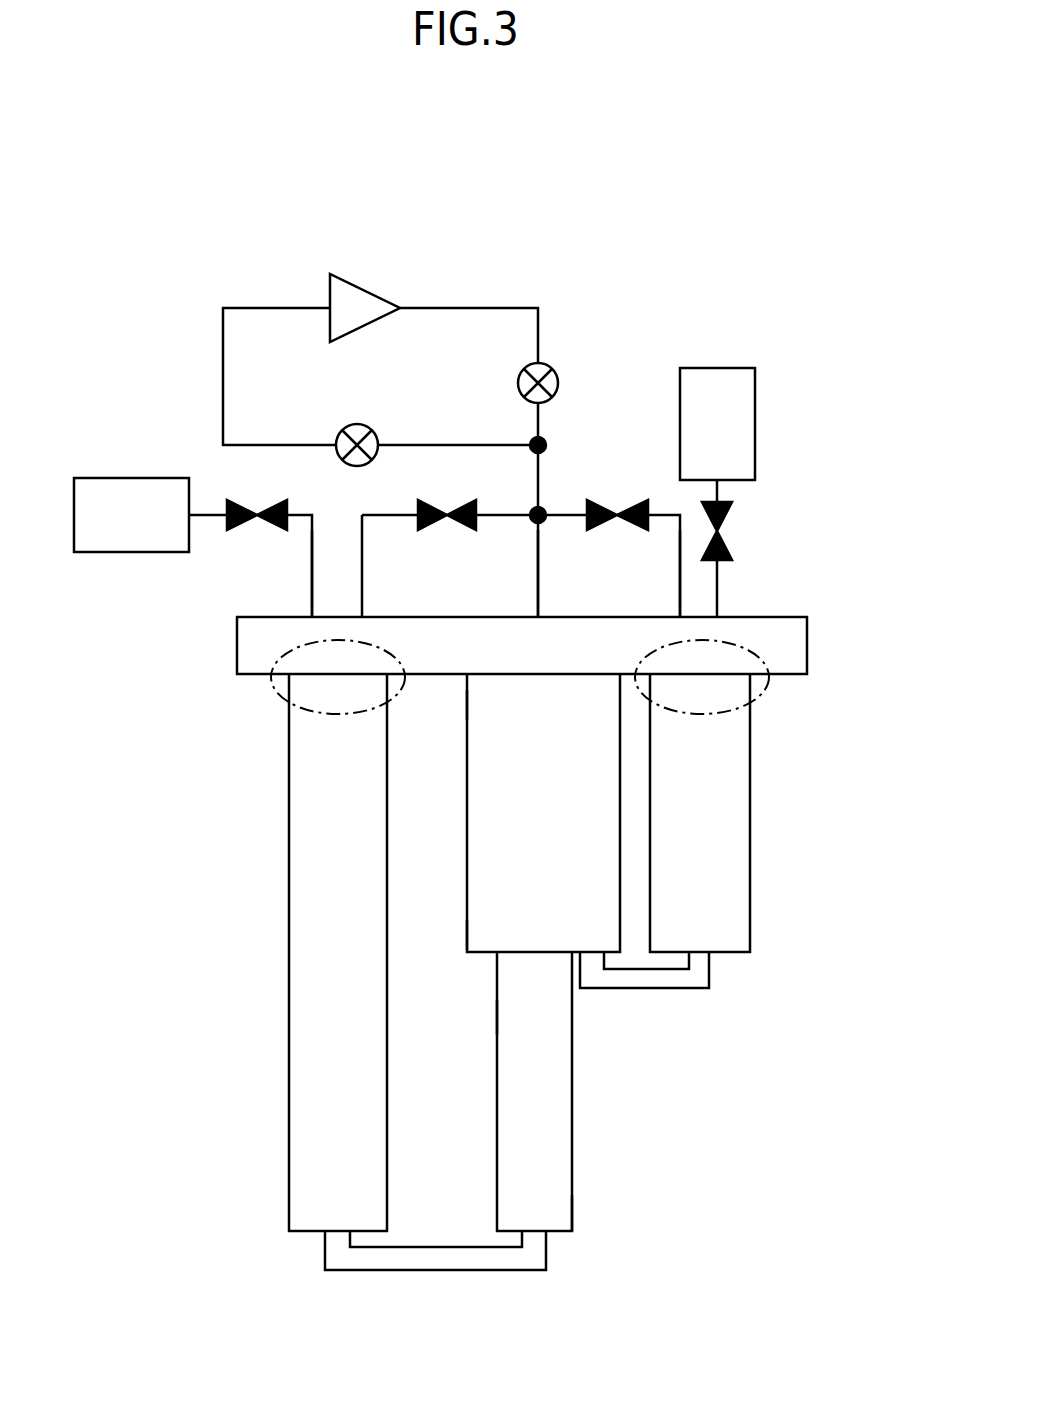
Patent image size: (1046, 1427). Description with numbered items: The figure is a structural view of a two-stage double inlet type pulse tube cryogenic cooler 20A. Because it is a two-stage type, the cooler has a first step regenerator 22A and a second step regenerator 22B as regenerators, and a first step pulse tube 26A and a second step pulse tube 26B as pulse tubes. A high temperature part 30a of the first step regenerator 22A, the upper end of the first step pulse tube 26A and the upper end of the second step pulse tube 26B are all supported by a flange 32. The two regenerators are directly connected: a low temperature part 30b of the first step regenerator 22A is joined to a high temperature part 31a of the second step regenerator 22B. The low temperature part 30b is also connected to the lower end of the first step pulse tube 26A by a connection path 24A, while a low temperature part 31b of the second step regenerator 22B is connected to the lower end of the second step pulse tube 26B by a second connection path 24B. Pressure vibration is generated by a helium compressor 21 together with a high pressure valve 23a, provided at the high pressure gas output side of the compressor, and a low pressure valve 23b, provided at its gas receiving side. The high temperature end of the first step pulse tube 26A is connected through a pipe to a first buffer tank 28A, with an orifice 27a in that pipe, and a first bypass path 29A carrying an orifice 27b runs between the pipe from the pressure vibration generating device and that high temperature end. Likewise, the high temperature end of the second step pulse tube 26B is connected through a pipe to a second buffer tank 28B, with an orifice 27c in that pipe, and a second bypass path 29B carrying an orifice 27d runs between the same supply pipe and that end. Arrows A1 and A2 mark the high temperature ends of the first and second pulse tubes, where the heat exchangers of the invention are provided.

The pulse tube cryogenic cooler 20A is at (733, 164).
The helium compressor 21 is at (366, 276).
The first step regenerator 22A is at (467, 873).
The second step regenerator 22B is at (558, 1120).
The high pressure valve 23a is at (556, 372).
The low pressure valve 23b is at (365, 426).
The connection path 24A is at (673, 988).
The second connection path 24B is at (440, 1270).
The first step pulse tube 26A is at (750, 876).
The second step pulse tube 26B is at (289, 910).
The orifice 27a is at (732, 512).
The orifice 27b is at (612, 500).
The orifice 27c is at (270, 530).
The orifice 27d is at (440, 530).
The first buffer tank 28A is at (730, 368).
The second buffer tank 28B is at (110, 478).
The first bypass path 29A is at (680, 583).
The second bypass path 29B is at (398, 515).
The high temperature part 30a is at (467, 705).
The low temperature part 30b is at (477, 933).
The high temperature part 31a is at (510, 1017).
The low temperature part 31b is at (557, 1215).
The flange 32 is at (775, 617).
The arrow A1 is at (270, 684).
The arrow A2 is at (763, 697).